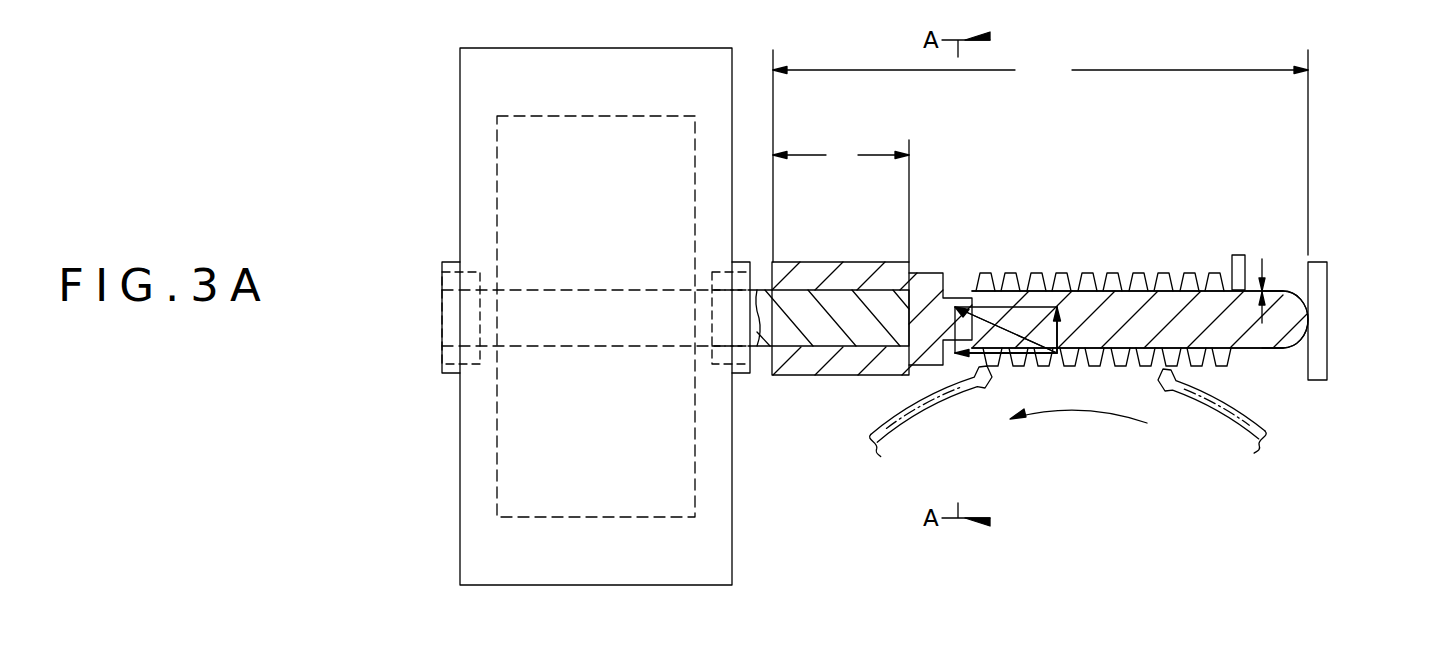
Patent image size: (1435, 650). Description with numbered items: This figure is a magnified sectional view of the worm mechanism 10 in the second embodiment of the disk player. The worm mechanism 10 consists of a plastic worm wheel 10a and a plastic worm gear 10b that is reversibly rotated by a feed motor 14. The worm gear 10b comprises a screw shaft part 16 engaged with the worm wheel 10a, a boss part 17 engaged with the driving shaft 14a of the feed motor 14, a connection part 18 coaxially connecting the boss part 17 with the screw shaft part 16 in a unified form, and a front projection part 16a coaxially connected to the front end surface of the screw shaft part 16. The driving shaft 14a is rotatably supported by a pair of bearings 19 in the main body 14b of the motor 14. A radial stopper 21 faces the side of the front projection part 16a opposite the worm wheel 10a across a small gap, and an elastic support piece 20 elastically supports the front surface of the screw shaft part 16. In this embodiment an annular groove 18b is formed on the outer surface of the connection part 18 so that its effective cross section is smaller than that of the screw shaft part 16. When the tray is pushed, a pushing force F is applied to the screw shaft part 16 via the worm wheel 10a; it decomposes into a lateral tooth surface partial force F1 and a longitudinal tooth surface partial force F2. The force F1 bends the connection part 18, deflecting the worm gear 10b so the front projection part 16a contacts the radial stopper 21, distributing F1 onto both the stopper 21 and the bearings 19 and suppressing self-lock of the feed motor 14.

The worm mechanism 10 is at (1350, 224).
The worm wheel 10a is at (1248, 400).
The worm gear 10b is at (1040, 156).
The feed motor 14 is at (450, 150).
The driving shaft 14a is at (836, 304).
The main body 14b is at (470, 206).
The screw shaft part 16 is at (1233, 255).
The front projection part 16a is at (1254, 340).
The boss part 17 is at (841, 201).
The connection part 18 is at (941, 158).
The annular groove 18b is at (958, 291).
The bearings 19 is at (440, 355).
The elastic support piece 20 is at (1317, 300).
The radial stopper 21 is at (1233, 264).
The pushing force F is at (986, 316).
The lateral tooth surface partial force F1 is at (1068, 322).
The longitudinal tooth surface partial force F2 is at (990, 362).